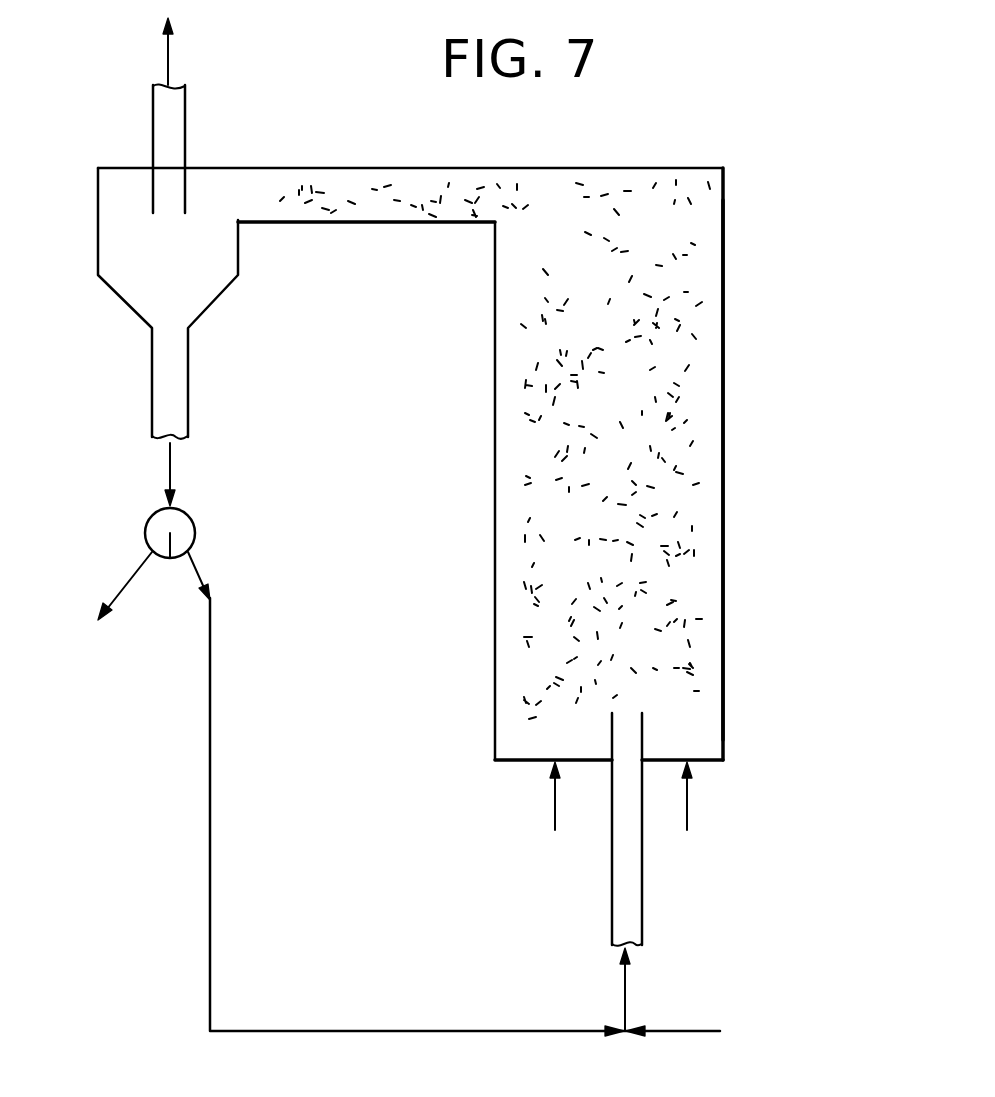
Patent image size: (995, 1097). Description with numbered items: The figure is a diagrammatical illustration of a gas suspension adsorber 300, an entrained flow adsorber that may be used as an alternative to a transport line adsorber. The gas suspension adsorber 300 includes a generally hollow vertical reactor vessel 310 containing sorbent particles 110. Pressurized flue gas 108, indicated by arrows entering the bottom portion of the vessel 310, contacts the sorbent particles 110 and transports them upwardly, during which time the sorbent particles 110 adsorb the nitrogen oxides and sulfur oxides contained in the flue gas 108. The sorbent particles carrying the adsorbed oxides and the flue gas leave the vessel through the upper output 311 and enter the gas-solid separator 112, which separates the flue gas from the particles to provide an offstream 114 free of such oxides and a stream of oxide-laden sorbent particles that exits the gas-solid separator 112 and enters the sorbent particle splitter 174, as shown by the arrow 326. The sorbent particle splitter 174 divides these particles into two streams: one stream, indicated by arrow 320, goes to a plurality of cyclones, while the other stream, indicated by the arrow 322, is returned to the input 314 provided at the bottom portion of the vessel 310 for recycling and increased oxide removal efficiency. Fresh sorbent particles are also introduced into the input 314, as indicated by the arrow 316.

The gas suspension adsorber 300 is at (640, 132).
The vertical reactor vessel 310 is at (723, 327).
The upper output 311 is at (412, 167).
The gas-solid separator 112 is at (98, 228).
The offstream 114 is at (168, 68).
The arrow indicating sorbent particle stream 326 is at (172, 480).
The sorbent particle splitter 174 is at (187, 532).
The arrow indicating sorbent particle stream to cyclones 320 is at (125, 580).
The arrow indicating recycled sorbent particle stream 322 is at (203, 573).
The arrow indicating fresh sorbent particles 316 is at (677, 1030).
The input 314 is at (642, 895).
The pressurized flue gas 108 is at (555, 802).
The sorbent particles 110 is at (645, 513).